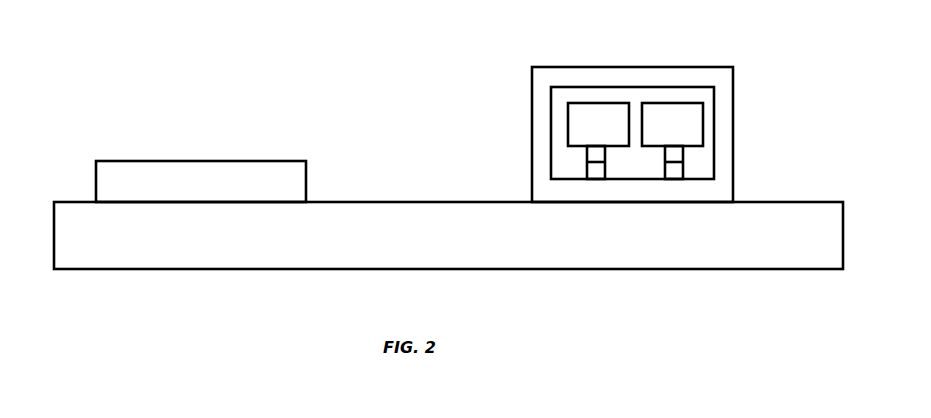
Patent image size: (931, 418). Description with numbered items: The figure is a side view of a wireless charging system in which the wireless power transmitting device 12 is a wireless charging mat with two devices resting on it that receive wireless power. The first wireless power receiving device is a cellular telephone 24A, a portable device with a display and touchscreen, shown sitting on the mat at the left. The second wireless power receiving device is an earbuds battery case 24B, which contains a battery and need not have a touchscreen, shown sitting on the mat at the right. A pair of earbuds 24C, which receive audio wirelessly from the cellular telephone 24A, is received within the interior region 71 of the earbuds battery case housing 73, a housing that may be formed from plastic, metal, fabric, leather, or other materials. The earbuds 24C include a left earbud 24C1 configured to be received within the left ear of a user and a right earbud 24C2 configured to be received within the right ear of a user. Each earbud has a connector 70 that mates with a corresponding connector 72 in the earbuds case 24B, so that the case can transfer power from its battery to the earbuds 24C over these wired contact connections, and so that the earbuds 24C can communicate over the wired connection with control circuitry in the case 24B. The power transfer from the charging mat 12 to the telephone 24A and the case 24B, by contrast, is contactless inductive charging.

The wireless power transmitting device 12 is at (190, 260).
The cellular telephone 24A is at (114, 170).
The earbuds battery case 24B is at (733, 87).
The earbuds 24C is at (576, 153).
The left earbud 24C1 is at (572, 127).
The right earbud 24C2 is at (703, 129).
The connector 70 is at (663, 152).
The interior region 71 is at (704, 94).
The connector 72 is at (598, 173).
The earbuds battery case housing 73 is at (655, 76).